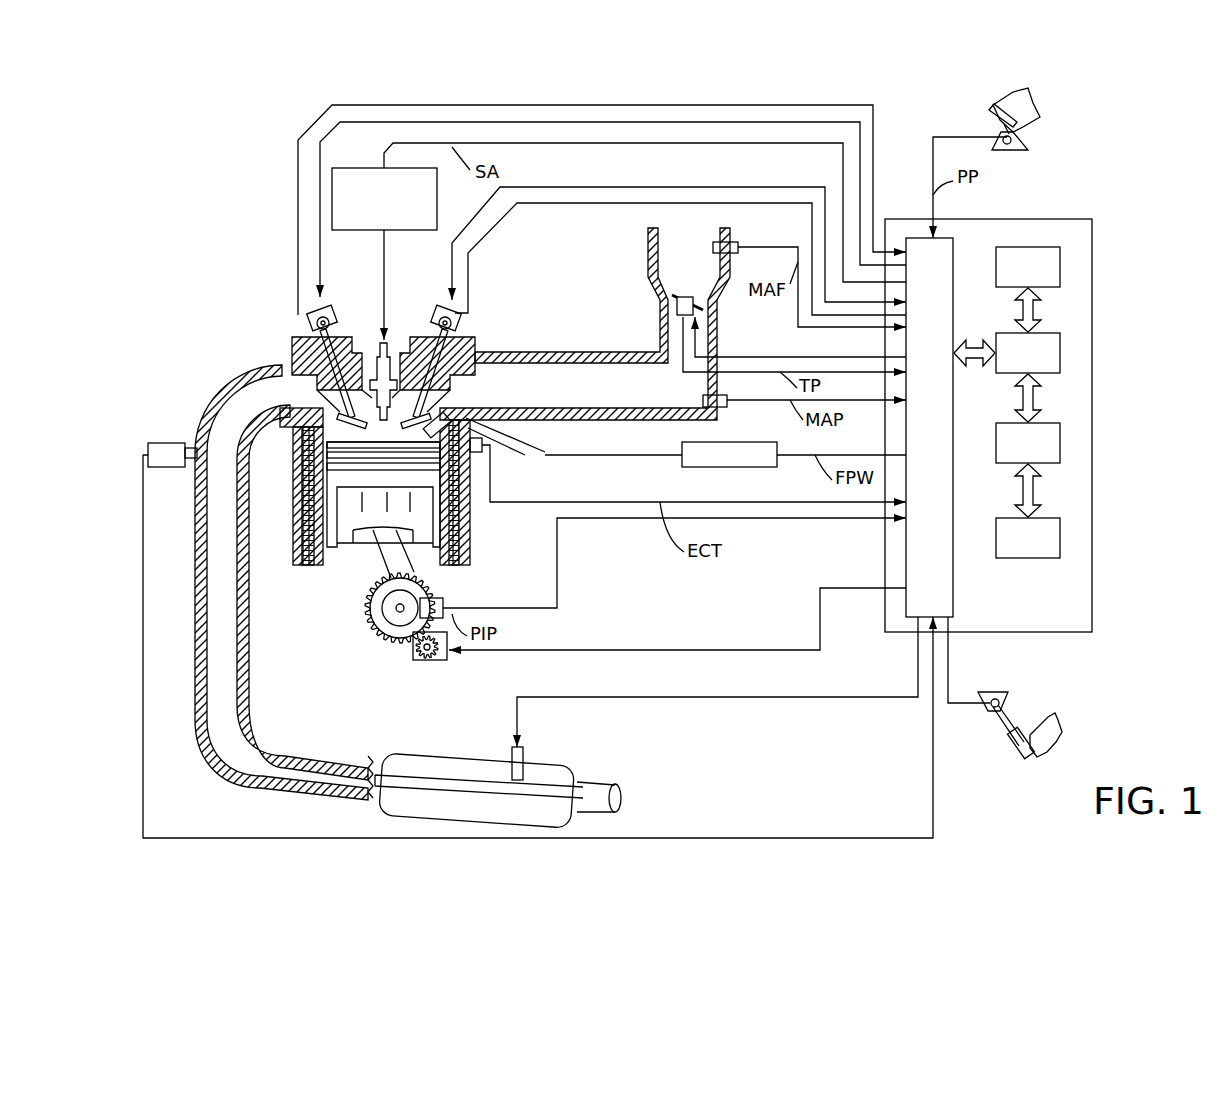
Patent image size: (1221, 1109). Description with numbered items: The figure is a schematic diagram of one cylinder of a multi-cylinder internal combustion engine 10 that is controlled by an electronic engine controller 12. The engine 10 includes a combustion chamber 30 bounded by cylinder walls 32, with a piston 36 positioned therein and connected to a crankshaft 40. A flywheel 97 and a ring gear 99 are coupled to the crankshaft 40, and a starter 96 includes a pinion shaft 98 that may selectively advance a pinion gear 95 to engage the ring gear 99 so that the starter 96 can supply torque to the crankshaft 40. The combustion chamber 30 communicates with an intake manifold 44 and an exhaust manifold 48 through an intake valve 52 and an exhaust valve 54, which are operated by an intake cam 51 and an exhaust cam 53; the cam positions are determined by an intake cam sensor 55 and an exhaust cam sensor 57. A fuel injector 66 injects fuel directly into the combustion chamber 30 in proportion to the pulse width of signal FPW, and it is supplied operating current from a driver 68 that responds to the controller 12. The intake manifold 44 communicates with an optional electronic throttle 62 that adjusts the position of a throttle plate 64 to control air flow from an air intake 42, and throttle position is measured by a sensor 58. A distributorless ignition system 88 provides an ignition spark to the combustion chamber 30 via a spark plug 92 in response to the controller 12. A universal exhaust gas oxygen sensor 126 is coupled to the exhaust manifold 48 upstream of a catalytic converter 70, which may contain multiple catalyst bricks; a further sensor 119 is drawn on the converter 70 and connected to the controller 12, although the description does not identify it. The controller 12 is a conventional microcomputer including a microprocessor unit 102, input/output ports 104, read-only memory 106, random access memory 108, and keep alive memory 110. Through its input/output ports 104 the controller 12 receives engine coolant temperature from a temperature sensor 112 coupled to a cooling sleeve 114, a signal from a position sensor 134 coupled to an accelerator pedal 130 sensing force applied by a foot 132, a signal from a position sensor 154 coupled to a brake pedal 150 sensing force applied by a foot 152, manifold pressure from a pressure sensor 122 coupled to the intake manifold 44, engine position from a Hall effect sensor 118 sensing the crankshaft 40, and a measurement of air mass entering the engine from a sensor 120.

The internal combustion engine 10 is at (236, 297).
The electronic engine controller 12 is at (1090, 219).
The combustion chamber 30 is at (380, 428).
The cylinder walls 32 is at (332, 552).
The piston 36 is at (367, 517).
The crankshaft 40 is at (388, 628).
The air intake 42 is at (700, 271).
The intake manifold 44 is at (642, 400).
The exhaust manifold 48 is at (276, 401).
The intake cam 51 is at (437, 312).
The intake valve 52 is at (428, 392).
The exhaust cam 53 is at (330, 312).
The exhaust valve 54 is at (322, 385).
The intake cam sensor 55 is at (454, 324).
The exhaust cam sensor 57 is at (314, 324).
The throttle position sensor 58 is at (668, 318).
The electronic throttle 62 is at (698, 300).
The throttle plate 64 is at (672, 297).
The fuel injector 66 is at (466, 440).
The driver 68 is at (700, 467).
The catalytic converter 70 is at (392, 752).
The distributorless ignition system 88 is at (345, 168).
The spark plug 92 is at (388, 343).
The pinion gear 95 is at (432, 660).
The starter 96 is at (445, 660).
The flywheel 97 is at (380, 605).
The pinion shaft 98 is at (420, 656).
The ring gear 99 is at (393, 640).
The microprocessor unit 102 is at (1062, 350).
The input/output ports 104 is at (957, 240).
The read-only memory 106 is at (1062, 262).
The random access memory 108 is at (1062, 442).
The keep alive memory 110 is at (1062, 535).
The temperature sensor 112 is at (482, 458).
The cooling sleeve 114 is at (470, 520).
The Hall effect sensor 118 is at (440, 600).
The exhaust temperature sensor 119 is at (525, 752).
The air mass sensor 120 is at (735, 242).
The pressure sensor 122 is at (720, 408).
The Universal Exhaust Gas Oxygen sensor 126 is at (145, 450).
The accelerator pedal 130 is at (990, 112).
The foot 132 is at (1040, 103).
The position sensor 134 is at (1022, 139).
The brake pedal 150 is at (1018, 745).
The foot 152 is at (1042, 714).
The position sensor 154 is at (985, 698).